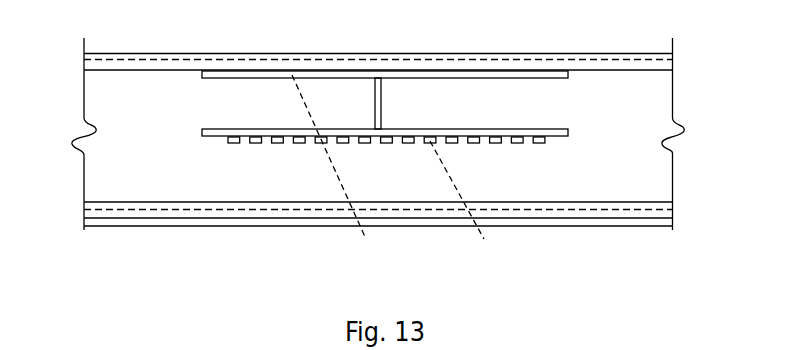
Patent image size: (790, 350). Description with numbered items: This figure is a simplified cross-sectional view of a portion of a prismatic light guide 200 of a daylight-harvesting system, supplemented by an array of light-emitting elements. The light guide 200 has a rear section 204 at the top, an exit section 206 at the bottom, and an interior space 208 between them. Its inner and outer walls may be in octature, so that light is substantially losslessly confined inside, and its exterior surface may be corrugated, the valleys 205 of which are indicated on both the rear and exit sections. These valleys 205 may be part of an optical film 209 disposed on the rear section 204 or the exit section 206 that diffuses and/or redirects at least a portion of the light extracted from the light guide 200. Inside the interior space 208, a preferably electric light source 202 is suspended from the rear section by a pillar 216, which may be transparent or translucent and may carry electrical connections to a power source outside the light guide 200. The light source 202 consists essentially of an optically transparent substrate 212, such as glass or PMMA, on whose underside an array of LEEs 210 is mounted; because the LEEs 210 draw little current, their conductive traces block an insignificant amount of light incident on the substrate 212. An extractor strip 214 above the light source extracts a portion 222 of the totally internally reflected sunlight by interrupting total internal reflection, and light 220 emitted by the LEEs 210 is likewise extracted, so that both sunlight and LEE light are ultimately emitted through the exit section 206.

The prismatic light guide 200 is at (709, 75).
The light source 202 is at (404, 97).
The rear section 204 is at (148, 55).
The valleys 205 is at (87, 60).
The exit section 206 is at (149, 217).
The interior space 208 is at (236, 189).
The optical film 209 is at (608, 223).
The LEEs 210 is at (545, 143).
The optically transparent substrate 212 is at (213, 137).
The extractor strip 214 is at (218, 72).
The pillar 216 is at (382, 90).
The light emitted by LEEs 220 is at (480, 199).
The portion of totally internally reflected sunlight 222 is at (353, 166).